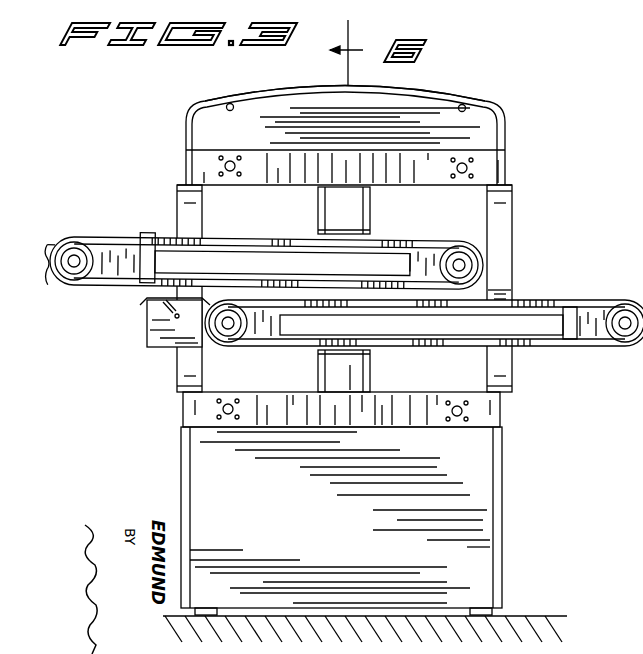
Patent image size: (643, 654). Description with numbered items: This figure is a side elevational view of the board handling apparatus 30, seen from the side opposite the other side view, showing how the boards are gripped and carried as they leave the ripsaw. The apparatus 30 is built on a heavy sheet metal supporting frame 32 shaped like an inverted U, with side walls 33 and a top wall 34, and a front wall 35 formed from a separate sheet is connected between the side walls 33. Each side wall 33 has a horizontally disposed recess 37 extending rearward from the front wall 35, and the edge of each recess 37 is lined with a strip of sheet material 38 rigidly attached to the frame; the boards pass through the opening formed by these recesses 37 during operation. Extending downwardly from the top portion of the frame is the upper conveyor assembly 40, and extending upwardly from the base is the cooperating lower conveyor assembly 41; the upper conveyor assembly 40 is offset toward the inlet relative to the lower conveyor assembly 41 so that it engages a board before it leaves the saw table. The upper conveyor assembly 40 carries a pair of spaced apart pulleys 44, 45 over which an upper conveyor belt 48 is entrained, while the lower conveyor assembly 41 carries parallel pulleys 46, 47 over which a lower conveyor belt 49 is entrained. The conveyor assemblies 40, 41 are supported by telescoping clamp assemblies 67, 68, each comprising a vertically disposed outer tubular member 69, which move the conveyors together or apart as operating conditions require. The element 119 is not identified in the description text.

The board handling apparatus 30 is at (483, 101).
The supporting frame 32 is at (503, 587).
The side walls 33 is at (182, 450).
The top wall 34 is at (440, 96).
The front wall 35 is at (338, 542).
The recesses 37 is at (503, 217).
The strip of sheet material 38 is at (513, 281).
The upper conveyor assembly 40 is at (299, 242).
The lower conveyor assembly 41 is at (424, 331).
The pulley 44 is at (78, 252).
The pulley 45 is at (478, 258).
The pulley 46 is at (224, 338).
The pulley 47 is at (642, 353).
The upper conveyor belt 48 is at (292, 236).
The lower conveyor belt 49 is at (593, 299).
The telescoping clamp assembly 67 is at (383, 210).
The telescoping clamp assembly 68 is at (377, 376).
The outer tubular member 69 is at (373, 216).
The adjustment block 119 is at (145, 328).